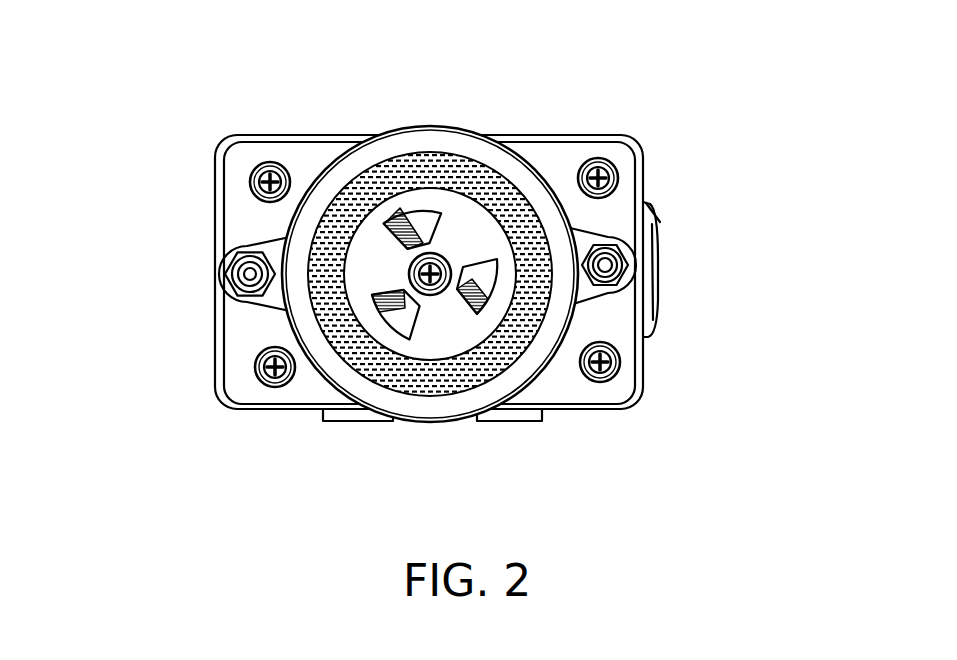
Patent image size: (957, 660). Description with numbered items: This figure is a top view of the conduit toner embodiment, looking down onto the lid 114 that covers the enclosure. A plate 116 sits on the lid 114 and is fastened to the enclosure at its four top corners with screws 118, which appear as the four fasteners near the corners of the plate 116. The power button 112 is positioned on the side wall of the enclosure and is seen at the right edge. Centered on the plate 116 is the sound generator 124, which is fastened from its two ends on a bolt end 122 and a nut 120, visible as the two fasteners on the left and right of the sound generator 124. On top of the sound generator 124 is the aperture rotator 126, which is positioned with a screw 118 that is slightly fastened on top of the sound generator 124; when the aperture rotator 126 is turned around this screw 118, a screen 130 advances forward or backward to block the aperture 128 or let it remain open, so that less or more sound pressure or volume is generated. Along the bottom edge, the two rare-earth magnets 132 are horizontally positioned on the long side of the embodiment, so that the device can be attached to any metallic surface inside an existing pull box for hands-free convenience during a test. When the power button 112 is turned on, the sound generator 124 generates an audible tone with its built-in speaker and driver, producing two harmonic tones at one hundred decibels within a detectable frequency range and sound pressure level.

The power button 112 is at (682, 301).
The lid 114 is at (650, 408).
The plate 116 is at (245, 388).
The screws 118 is at (447, 262).
The nut 120 is at (228, 292).
The bolt end 122 is at (245, 258).
The sound generator 124 is at (418, 403).
The aperture rotator 126 is at (413, 178).
The aperture 128 is at (477, 282).
The screen 130 is at (383, 226).
The rare-earth magnets 132 is at (353, 414).